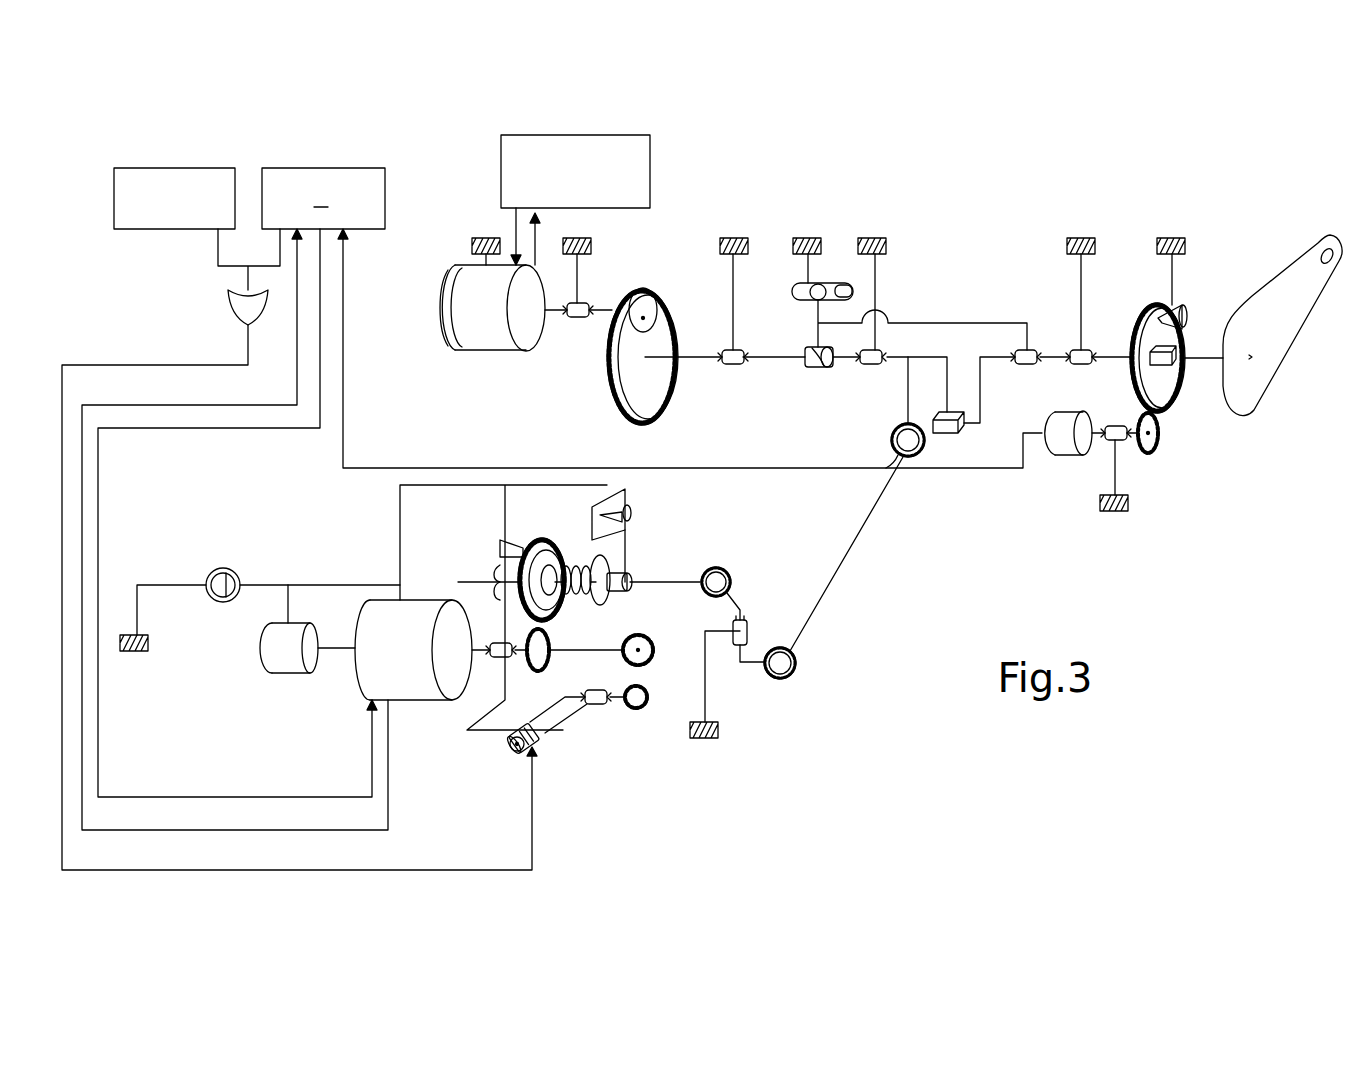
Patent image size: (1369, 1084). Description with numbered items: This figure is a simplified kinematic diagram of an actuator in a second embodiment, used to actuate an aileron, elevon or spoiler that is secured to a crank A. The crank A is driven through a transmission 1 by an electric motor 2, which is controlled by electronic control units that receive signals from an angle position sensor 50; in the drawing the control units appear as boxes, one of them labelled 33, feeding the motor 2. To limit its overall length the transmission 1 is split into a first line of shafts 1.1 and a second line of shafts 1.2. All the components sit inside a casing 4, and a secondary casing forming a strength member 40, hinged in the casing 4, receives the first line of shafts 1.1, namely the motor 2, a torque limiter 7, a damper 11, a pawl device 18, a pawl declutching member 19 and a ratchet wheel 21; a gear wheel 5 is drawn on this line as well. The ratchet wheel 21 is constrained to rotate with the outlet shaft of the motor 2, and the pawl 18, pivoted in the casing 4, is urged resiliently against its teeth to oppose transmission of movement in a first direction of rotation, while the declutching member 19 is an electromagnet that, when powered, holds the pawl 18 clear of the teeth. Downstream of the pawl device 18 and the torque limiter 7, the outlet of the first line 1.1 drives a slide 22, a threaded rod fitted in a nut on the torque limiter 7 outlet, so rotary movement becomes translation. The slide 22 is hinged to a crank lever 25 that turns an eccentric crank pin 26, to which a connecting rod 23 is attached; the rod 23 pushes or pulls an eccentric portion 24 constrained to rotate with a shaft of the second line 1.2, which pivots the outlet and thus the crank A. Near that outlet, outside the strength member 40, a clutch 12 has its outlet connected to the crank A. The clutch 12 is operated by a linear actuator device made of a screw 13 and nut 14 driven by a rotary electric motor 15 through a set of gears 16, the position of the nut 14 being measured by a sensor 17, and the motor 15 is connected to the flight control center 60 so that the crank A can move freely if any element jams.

The transmission 1 is at (784, 196).
The first line of shafts 1.1 is at (660, 548).
The second line of shafts 1.2 is at (1116, 314).
The electric motor 2 is at (389, 664).
The casing 4 is at (133, 655).
The gear wheel 5 is at (542, 542).
The torque limiter 7 is at (571, 547).
The damper 11 is at (268, 648).
The clutch 12 is at (955, 372).
The screw 13 is at (767, 365).
The nut 14 is at (820, 368).
The rotary electric motor 15 is at (495, 343).
The set of gears 16 is at (644, 296).
The sensor 17 is at (446, 305).
The pawl device 18 is at (625, 708).
The pawl declutching member 19 is at (512, 738).
The ratchet wheel 21 is at (655, 650).
The slide 22 is at (676, 581).
The connecting rod 23 is at (840, 566).
The eccentric portion 24 is at (905, 393).
The crank lever 25 is at (737, 602).
The eccentric crank pin 26 is at (747, 676).
The control unit 33 is at (172, 212).
The strength member 40 is at (436, 485).
The angle position sensor 50 is at (1145, 457).
The flight control center 60 is at (562, 180).
The crank A is at (1262, 388).